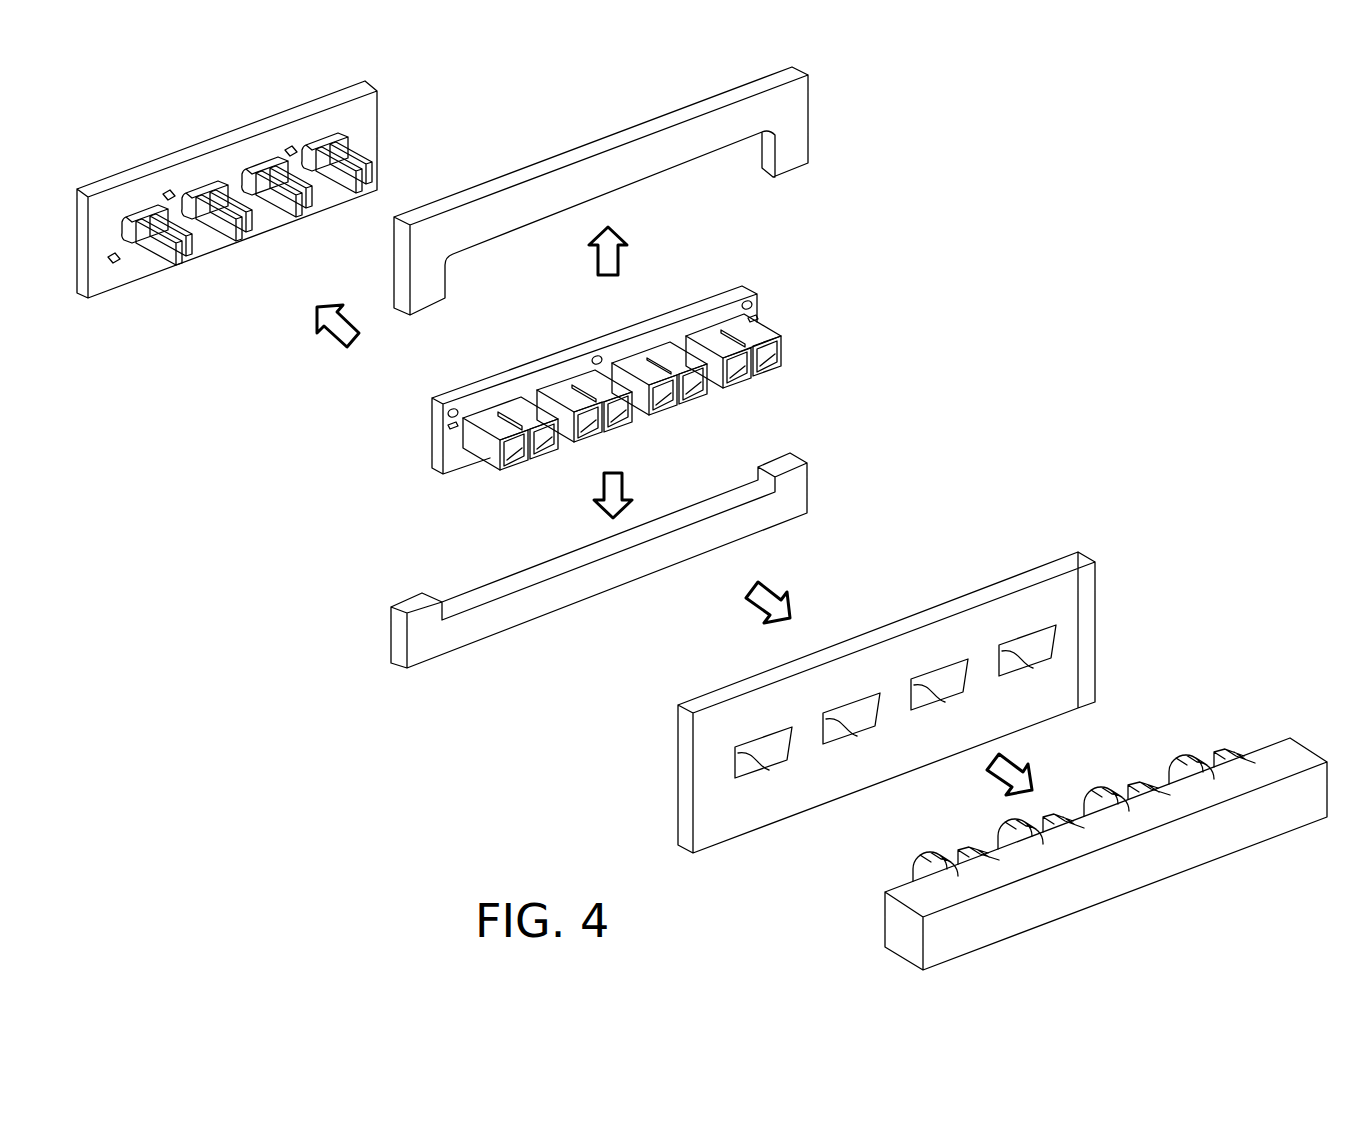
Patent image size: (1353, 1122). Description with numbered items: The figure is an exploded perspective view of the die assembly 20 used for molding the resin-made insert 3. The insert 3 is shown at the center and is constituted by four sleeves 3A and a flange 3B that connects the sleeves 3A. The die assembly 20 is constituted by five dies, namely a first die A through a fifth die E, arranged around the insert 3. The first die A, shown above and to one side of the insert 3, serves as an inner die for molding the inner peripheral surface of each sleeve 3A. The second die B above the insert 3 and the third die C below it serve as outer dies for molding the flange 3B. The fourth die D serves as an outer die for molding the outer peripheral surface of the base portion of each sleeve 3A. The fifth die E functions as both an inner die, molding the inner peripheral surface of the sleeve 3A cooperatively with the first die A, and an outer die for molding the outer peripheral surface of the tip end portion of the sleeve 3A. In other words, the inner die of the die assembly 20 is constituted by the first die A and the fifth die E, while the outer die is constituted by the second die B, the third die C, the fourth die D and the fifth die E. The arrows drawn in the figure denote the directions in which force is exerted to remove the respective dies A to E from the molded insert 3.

The die assembly 20 is at (1012, 373).
The first die A is at (215, 140).
The second die B is at (587, 142).
The insert 3 is at (690, 285).
The sleeve 3A is at (764, 335).
The flange 3B is at (520, 365).
The third die C is at (562, 618).
The fourth die D is at (913, 618).
The fifth die E is at (1260, 762).